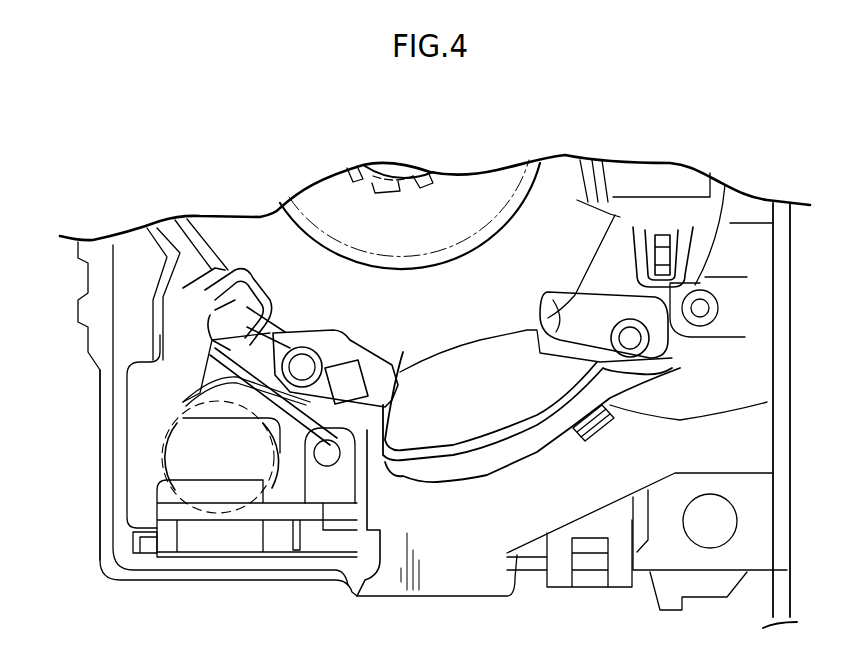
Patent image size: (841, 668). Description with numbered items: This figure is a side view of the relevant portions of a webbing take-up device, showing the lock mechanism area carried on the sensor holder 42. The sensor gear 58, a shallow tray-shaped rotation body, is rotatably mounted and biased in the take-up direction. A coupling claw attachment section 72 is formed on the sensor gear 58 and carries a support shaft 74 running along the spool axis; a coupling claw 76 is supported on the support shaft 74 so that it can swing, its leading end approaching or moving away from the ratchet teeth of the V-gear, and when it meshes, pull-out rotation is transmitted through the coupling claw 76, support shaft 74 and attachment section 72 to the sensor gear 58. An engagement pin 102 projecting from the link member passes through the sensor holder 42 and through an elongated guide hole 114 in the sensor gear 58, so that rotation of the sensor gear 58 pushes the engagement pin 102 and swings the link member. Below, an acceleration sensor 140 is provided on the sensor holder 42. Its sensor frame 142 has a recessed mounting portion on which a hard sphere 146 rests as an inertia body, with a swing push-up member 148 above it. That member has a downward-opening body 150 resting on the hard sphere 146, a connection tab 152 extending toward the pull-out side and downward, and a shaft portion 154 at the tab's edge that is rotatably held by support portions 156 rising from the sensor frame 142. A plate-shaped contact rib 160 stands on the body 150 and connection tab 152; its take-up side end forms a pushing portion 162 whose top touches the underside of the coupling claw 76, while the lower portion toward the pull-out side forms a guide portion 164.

The sensor holder 42 is at (104, 493).
The sensor gear 58 is at (213, 232).
The coupling claw attachment section 72 is at (403, 348).
The support shaft 74 is at (302, 362).
The coupling claw 76 is at (265, 330).
The engagement pin 102 is at (563, 353).
The guide hole 114 is at (560, 300).
The acceleration sensor 140 is at (144, 443).
The sensor frame 142 is at (237, 497).
The hard sphere 146 is at (177, 457).
The swing push-up member 148 is at (163, 407).
The body 150 is at (217, 408).
The connection tab 152 is at (275, 470).
The shaft portion 154 is at (333, 453).
The support portions 156 is at (340, 497).
The contact rib 160 is at (193, 383).
The pushing portion 162 is at (247, 287).
The guide portion 164 is at (348, 350).